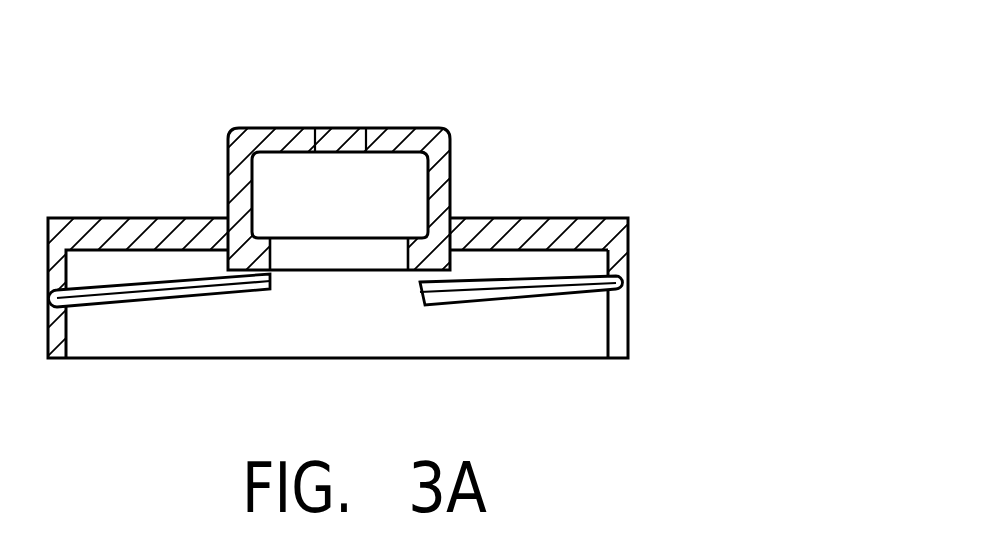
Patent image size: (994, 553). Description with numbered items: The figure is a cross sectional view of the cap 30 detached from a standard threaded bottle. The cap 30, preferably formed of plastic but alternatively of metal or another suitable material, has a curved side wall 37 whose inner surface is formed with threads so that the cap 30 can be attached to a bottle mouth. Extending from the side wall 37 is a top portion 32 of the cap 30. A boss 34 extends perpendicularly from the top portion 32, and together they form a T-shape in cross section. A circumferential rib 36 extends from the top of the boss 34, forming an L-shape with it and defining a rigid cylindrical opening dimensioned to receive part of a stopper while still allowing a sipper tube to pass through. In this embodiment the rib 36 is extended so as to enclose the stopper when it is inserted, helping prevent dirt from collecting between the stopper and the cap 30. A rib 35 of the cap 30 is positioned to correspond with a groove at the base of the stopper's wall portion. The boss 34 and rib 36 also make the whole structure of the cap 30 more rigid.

The cap 30 is at (422, 193).
The top portion 32 is at (563, 221).
The boss 34 is at (446, 185).
The rib 35 is at (262, 256).
The circumferential rib 36 is at (413, 148).
The curved side wall 37 is at (626, 325).